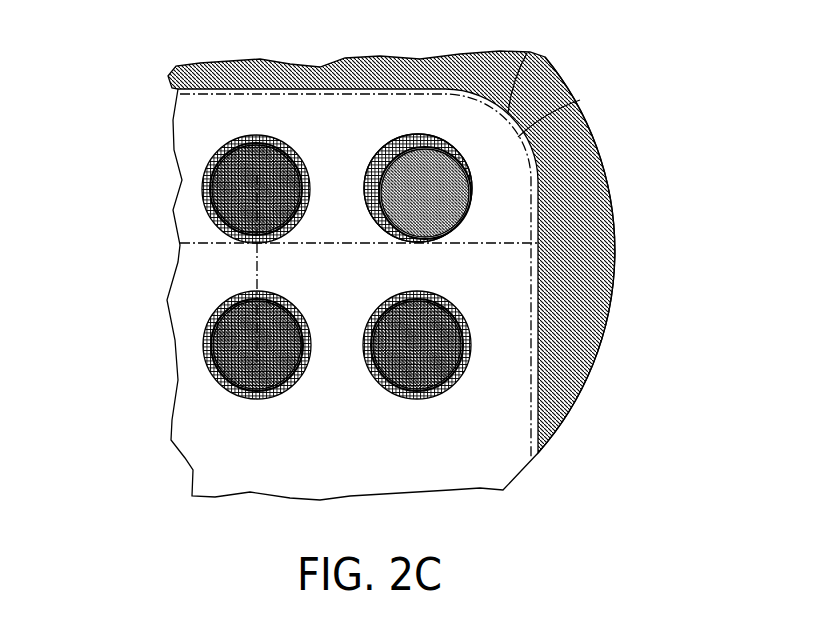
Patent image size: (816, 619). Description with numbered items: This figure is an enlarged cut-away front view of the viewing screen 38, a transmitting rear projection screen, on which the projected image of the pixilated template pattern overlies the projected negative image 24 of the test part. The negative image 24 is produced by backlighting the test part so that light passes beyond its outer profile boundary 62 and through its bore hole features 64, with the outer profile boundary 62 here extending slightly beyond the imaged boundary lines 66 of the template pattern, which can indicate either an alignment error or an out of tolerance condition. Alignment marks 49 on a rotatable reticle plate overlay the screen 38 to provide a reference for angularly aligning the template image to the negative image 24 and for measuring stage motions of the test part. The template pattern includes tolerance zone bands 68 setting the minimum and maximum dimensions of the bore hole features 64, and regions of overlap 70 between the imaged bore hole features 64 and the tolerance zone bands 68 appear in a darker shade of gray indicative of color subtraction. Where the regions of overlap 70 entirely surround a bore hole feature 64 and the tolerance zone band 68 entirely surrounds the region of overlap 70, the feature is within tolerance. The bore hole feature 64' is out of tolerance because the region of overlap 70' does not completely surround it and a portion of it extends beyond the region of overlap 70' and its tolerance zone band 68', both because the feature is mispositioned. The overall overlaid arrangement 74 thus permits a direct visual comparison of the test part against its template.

The negative optical image 24 is at (302, 462).
The viewing screen 38 is at (587, 375).
The alignment marks 49 is at (207, 243).
The outer profile boundary 62 is at (518, 58).
The bore hole features 64 is at (445, 188).
The bore hole feature 64' is at (425, 169).
The boundary lines 66 is at (572, 102).
The tolerance zone bands 68 is at (315, 281).
The tolerance zone band 68' is at (404, 178).
The regions of overlap 70 is at (336, 277).
The region of overlap 70' is at (445, 182).
The connector assembly 74 is at (653, 323).